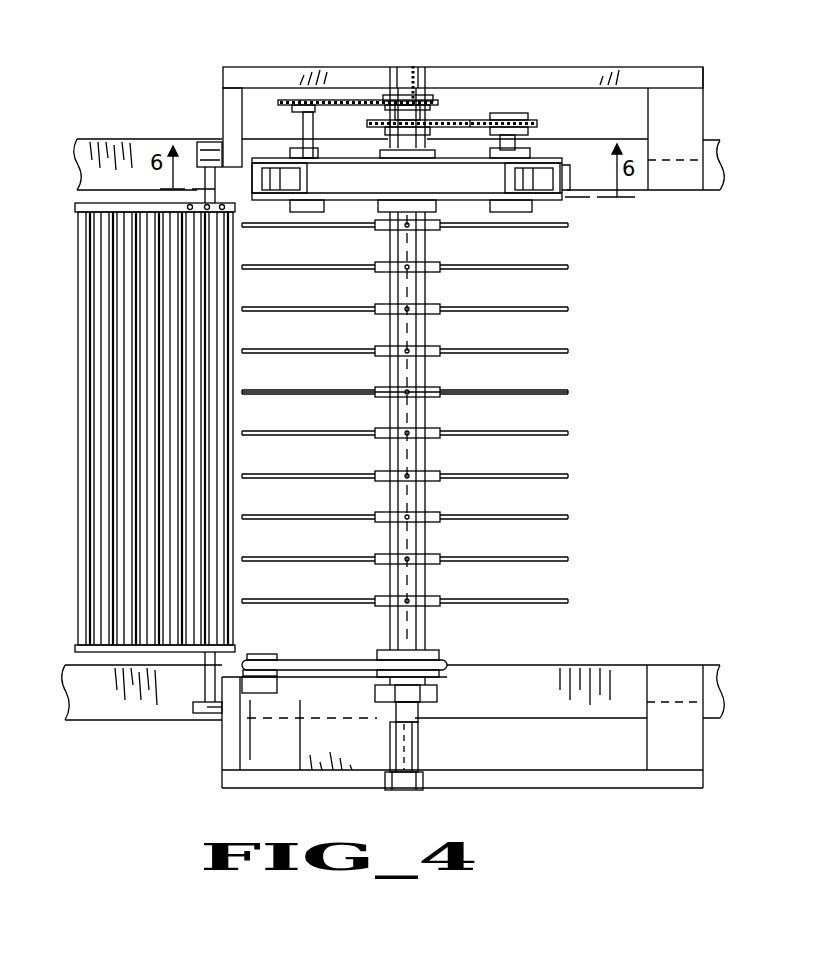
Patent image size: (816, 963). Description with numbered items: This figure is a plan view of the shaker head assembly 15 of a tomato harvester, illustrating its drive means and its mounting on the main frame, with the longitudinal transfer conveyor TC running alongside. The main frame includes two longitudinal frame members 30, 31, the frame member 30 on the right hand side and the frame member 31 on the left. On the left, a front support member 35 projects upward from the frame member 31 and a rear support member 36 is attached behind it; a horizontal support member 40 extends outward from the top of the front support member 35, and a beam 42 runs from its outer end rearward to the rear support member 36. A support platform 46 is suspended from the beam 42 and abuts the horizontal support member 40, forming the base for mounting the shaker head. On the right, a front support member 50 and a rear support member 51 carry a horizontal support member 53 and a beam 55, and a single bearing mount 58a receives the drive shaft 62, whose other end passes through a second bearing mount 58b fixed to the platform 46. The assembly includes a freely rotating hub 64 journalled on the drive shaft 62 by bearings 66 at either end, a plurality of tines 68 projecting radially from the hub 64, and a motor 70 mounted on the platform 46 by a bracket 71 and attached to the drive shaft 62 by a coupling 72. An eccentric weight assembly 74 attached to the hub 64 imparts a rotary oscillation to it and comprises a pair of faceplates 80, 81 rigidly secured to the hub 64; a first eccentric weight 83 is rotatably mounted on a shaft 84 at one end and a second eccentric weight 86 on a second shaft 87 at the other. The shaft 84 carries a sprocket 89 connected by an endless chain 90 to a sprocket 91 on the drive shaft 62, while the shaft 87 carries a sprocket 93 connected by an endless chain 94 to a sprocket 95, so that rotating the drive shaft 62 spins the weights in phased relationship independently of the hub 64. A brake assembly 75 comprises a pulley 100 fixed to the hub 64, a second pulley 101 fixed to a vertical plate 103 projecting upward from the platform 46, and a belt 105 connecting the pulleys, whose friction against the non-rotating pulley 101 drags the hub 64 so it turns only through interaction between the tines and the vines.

The shaker head assembly 15 is at (576, 394).
The longitudinal frame member 30 is at (725, 157).
The longitudinal frame member 31 is at (722, 668).
The front support member 35 is at (200, 722).
The rear support member 36 is at (697, 757).
The horizontal support member 40 is at (225, 757).
The beam 42 is at (594, 785).
The support platform 46 is at (290, 760).
The front support member 50 is at (205, 142).
The rear support member 51 is at (697, 108).
The horizontal support member 53 is at (225, 97).
The beam 55 is at (632, 68).
The bearing mount 58a is at (413, 66).
The bearing mount 58b is at (437, 691).
The drive shaft 62 is at (430, 95).
The hub 64 is at (422, 287).
The bearings 66 is at (392, 152).
The tines 68 is at (570, 310).
The motor 70 is at (402, 790).
The bracket 71 is at (420, 735).
The coupling 72 is at (420, 715).
The eccentric weight assembly 74 is at (543, 200).
The brake assembly 75 is at (446, 660).
The faceplate 80 is at (560, 200).
The faceplate 81 is at (550, 160).
The first eccentric weight 83 is at (282, 190).
The shaft 84 is at (303, 130).
The second eccentric weight 86 is at (565, 183).
The second shaft 87 is at (530, 135).
The sprocket 89 is at (296, 100).
The endless chain 90 is at (343, 100).
The sprocket 91 is at (393, 100).
The sprocket 93 is at (495, 120).
The endless chain 94 is at (446, 120).
The sprocket 95 is at (370, 123).
The pulley 100 is at (380, 660).
The second pulley 101 is at (252, 654).
The vertical plate 103 is at (205, 688).
The belt 105 is at (298, 665).
The transfer conveyor TC is at (78, 350).